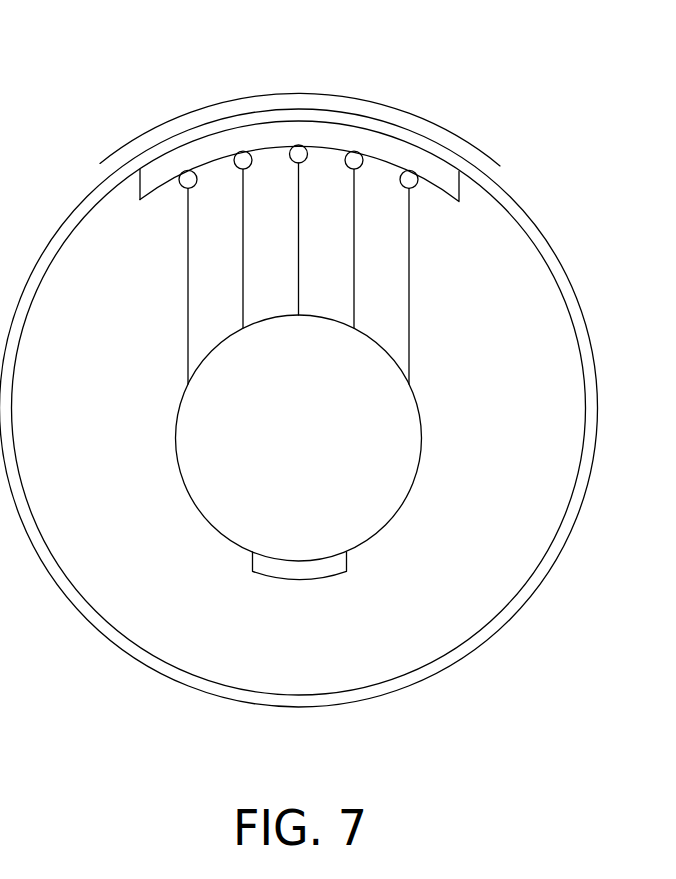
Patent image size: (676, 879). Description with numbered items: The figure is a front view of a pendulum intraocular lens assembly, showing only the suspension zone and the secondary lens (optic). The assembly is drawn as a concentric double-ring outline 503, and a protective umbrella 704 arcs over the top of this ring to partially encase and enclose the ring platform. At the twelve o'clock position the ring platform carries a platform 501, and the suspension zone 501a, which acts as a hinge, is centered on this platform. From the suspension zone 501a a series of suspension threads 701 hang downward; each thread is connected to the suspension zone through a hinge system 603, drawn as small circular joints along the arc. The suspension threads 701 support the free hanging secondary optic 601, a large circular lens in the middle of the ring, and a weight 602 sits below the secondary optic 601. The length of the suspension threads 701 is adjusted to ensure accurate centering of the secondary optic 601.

The housing 503 is at (435, 677).
The protective umbrella 704 is at (265, 91).
The 12 O'clock position platform 501 is at (303, 133).
The suspension zone 501a is at (205, 152).
The hinge system 603 is at (418, 188).
The suspension threads 701 is at (410, 305).
The secondary optic 601 is at (412, 437).
The weight 602 is at (346, 565).